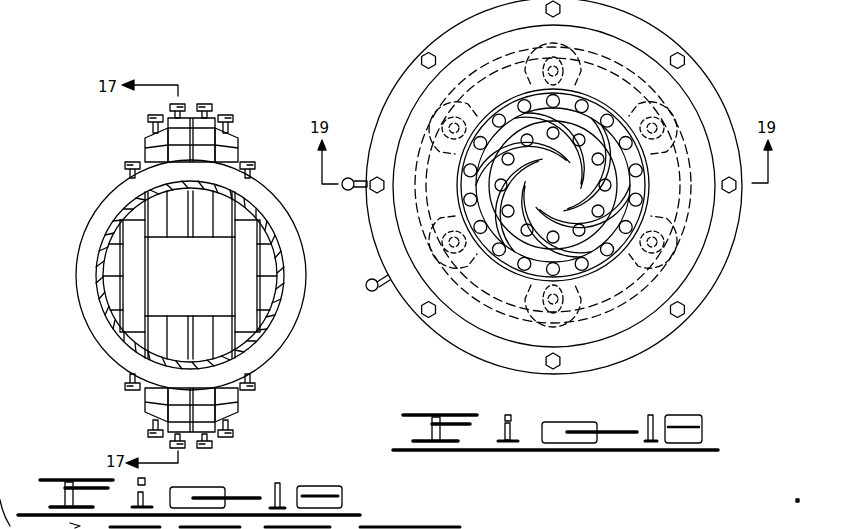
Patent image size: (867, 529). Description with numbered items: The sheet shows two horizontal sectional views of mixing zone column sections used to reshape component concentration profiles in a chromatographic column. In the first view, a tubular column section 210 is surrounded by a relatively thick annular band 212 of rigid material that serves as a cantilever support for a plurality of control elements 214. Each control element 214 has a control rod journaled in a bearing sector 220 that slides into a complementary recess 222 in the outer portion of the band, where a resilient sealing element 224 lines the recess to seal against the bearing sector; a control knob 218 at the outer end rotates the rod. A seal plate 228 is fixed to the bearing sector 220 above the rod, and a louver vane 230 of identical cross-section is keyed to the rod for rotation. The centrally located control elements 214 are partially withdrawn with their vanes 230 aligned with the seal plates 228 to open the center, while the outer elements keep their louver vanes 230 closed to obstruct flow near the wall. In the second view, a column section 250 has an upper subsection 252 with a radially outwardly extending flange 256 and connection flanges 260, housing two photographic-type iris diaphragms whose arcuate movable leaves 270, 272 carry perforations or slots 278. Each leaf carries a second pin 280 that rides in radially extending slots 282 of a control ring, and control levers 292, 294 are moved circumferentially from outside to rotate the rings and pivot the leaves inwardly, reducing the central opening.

In FIG. 16, the mixing zone column section 210 is at (100, 302).
In FIG. 16, the annular band 212 is at (281, 335).
In FIG. 16, the control element 214 is at (248, 110).
In FIG. 16, the control knob 218 is at (206, 104).
In FIG. 16, the bearing sector 220 is at (232, 133).
In FIG. 16, the recess 222 is at (572, 523).
In FIG. 16, the resilient sealing element 224 is at (57, 523).
In FIG. 16, the seal plate 228 is at (152, 140).
In FIG. 16, the louver vane 230 is at (247, 255).
In FIG. 18, the mixing zone column section 250 is at (630, 107).
In FIG. 18, the upper subsection 252 is at (512, 91).
In FIG. 18, the radially outwardly extending flange 256 is at (697, 220).
In FIG. 18, the connection flange 260 is at (458, 338).
In FIG. 18, the movable leaves of the upper diaphragm 270 is at (600, 292).
In FIG. 18, the movable leaves of the lower diaphragm 272 is at (572, 212).
In FIG. 18, the perforations or slots 278 is at (592, 108).
In FIG. 18, the second pin 280 is at (412, 86).
In FIG. 18, the radially extending slots 282 is at (405, 104).
In FIG. 18, the control lever 292 is at (371, 292).
In FIG. 18, the control lever 294 is at (346, 191).